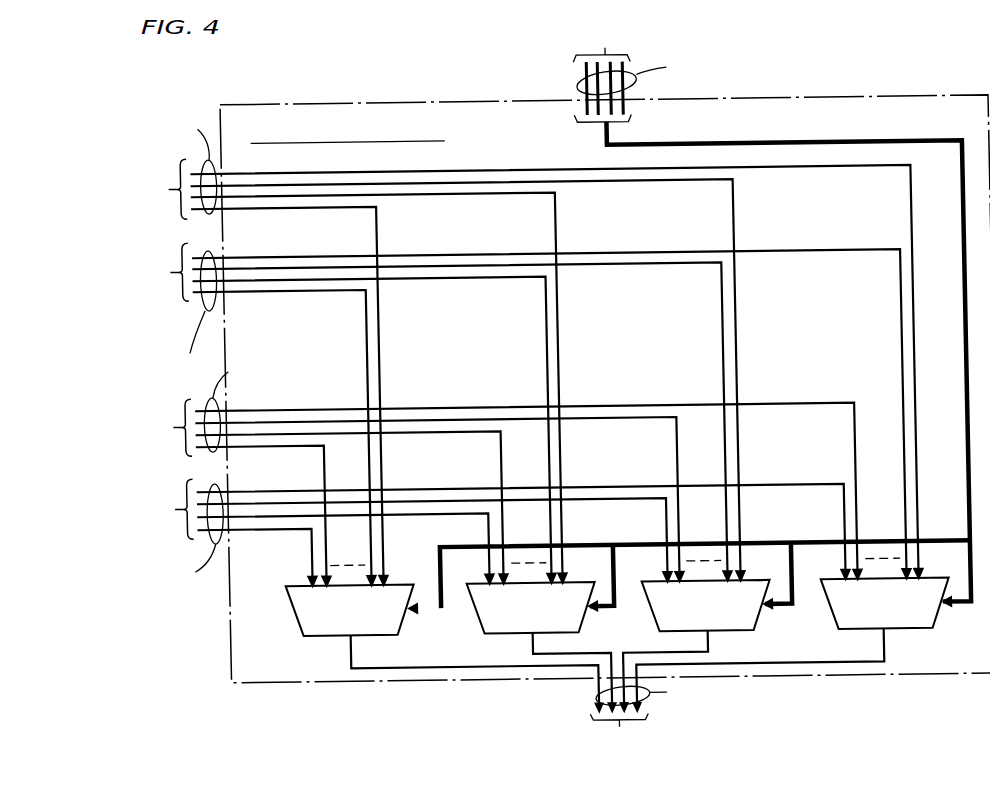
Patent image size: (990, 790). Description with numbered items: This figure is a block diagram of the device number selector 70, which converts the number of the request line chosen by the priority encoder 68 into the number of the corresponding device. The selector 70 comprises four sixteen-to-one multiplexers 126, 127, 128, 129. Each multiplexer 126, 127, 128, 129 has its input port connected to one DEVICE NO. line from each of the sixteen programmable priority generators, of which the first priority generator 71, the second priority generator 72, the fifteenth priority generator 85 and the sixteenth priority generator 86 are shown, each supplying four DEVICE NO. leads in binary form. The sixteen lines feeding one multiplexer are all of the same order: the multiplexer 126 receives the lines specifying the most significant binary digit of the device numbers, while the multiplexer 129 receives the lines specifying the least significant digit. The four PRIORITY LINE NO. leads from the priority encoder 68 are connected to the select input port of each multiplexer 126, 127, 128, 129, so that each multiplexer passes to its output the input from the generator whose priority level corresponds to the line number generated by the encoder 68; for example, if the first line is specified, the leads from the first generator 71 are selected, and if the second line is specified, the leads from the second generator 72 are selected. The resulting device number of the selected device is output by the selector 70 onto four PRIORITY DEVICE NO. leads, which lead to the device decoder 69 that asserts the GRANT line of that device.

The priority encoder 68 is at (647, 68).
The device decoder 69 is at (676, 718).
The device number selector 70 is at (362, 100).
The first programmable priority generator 71 is at (497, 336).
The second programmable priority generator 72 is at (485, 411).
The fifteenth programmable priority generator 85 is at (479, 464).
The sixteenth programmable priority generator 86 is at (461, 540).
The 16:1 multiplexer 126 is at (300, 633).
The 16:1 multiplexer 127 is at (482, 632).
The 16:1 multiplexer 128 is at (657, 615).
The 16:1 multiplexer 129 is at (834, 619).